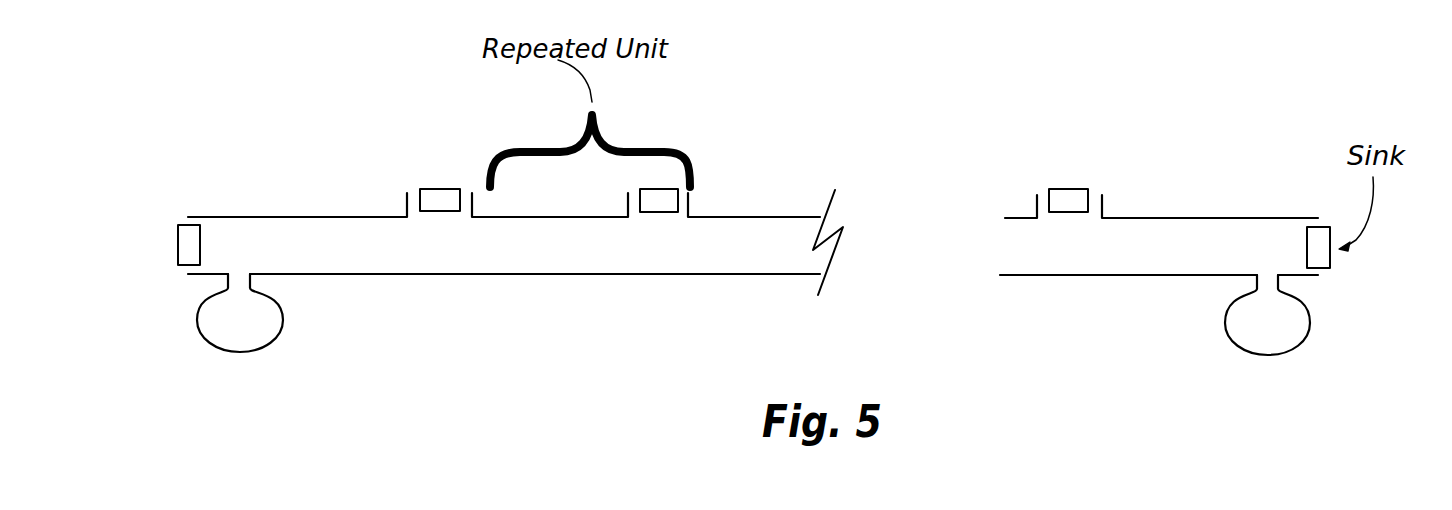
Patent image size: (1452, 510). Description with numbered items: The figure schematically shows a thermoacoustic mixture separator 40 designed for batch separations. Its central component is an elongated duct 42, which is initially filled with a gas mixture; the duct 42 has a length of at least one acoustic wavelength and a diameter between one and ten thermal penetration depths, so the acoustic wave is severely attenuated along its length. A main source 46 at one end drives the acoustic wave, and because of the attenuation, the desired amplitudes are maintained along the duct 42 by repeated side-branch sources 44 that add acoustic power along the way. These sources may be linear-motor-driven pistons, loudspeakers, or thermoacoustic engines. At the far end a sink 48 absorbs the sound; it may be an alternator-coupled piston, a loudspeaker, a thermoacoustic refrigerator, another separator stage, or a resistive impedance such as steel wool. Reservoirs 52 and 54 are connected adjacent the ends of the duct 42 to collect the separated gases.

The thermoacoustic mixture separator 40 is at (768, 278).
The elongated duct 42 is at (480, 276).
The side-branch source 44 is at (445, 196).
The main source 46 is at (177, 243).
The sink 48 is at (1323, 228).
The reservoir 52 is at (257, 334).
The reservoir 54 is at (1287, 334).